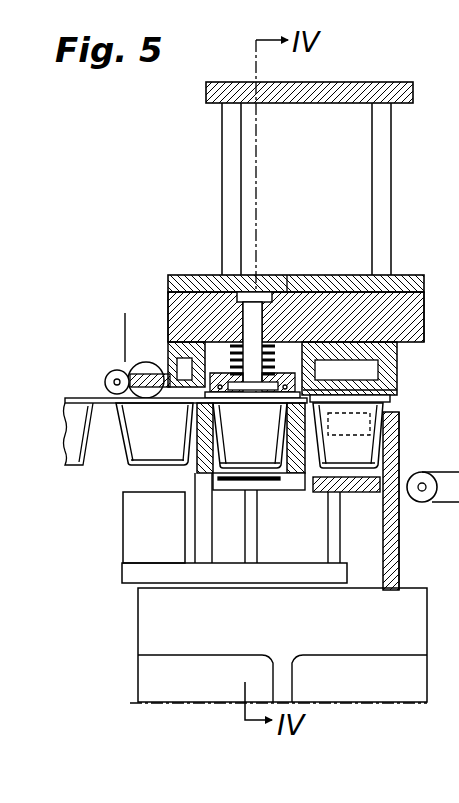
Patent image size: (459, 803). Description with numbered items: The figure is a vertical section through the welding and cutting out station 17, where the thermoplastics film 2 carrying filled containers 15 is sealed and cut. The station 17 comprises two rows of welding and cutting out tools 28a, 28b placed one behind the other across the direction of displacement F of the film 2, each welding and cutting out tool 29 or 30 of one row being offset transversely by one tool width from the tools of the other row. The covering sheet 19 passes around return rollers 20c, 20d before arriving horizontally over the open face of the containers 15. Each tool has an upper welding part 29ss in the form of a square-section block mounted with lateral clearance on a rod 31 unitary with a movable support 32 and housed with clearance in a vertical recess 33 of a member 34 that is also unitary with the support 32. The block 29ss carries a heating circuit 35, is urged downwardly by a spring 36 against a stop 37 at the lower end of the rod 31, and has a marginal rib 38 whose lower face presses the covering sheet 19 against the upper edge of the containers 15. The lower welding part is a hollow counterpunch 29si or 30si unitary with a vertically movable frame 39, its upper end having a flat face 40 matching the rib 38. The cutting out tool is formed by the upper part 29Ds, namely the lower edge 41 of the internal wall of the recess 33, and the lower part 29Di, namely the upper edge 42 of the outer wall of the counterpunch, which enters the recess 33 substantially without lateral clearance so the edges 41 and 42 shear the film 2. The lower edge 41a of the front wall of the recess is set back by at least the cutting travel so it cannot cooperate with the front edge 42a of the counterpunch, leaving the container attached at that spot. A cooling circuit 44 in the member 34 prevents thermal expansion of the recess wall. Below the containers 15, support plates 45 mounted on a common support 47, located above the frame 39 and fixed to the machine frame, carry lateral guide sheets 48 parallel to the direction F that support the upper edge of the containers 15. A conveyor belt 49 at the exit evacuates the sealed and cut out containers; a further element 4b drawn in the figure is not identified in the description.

The welding and cutting out station 17 is at (414, 128).
The row of welding and cutting out tools 28a is at (183, 300).
The row of welding and cutting out tools 28b is at (347, 303).
The rod 31 is at (217, 287).
The upper part of welding tool 29ss is at (287, 274).
The movable support 32 is at (413, 309).
The marginal rib 38 is at (187, 343).
The spring 36 is at (238, 373).
The vertical recess 33 is at (291, 356).
The lower edge of internal wall of recess 41 is at (313, 362).
The member 34 is at (398, 354).
The cooling circuit 44 is at (376, 372).
The upper part of cutting out tool 29Ds is at (433, 386).
The heating circuit 35 is at (256, 396).
The covering sheet 19 is at (125, 315).
The return roller 20d is at (130, 361).
The return roller 20c is at (106, 379).
The thermoplastics film 2 is at (107, 405).
The lower edge of front wall of recess 41a is at (154, 434).
The front edge of counterpunch 42a is at (155, 433).
The container 15 is at (252, 456).
The lower part of cutting out tool 29Di is at (197, 466).
The stop 37 is at (250, 435).
The flat face 40 is at (318, 437).
The upper edge of counterpunch outer wall 42 is at (325, 417).
The lateral guide sheets 48 is at (352, 478).
The welding and cutting out tool 30 is at (360, 538).
The lower part of welding tool 30si is at (383, 460).
The direction of displacement F is at (410, 438).
The conveyor belt 49 is at (440, 505).
The lower part of welding tool 29si is at (287, 480).
The welding and cutting out tool 29 is at (265, 512).
The support plate 45 is at (317, 494).
The support box 4b is at (234, 491).
The common support 47 is at (122, 573).
The movable frame 39 is at (282, 645).